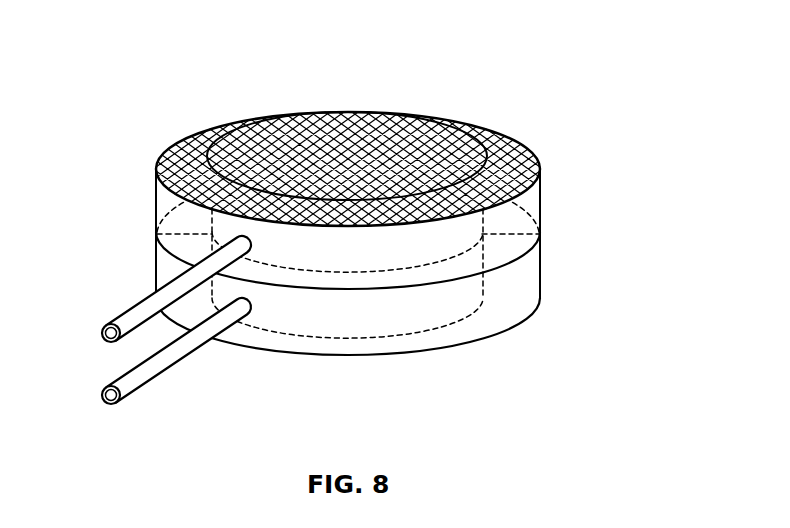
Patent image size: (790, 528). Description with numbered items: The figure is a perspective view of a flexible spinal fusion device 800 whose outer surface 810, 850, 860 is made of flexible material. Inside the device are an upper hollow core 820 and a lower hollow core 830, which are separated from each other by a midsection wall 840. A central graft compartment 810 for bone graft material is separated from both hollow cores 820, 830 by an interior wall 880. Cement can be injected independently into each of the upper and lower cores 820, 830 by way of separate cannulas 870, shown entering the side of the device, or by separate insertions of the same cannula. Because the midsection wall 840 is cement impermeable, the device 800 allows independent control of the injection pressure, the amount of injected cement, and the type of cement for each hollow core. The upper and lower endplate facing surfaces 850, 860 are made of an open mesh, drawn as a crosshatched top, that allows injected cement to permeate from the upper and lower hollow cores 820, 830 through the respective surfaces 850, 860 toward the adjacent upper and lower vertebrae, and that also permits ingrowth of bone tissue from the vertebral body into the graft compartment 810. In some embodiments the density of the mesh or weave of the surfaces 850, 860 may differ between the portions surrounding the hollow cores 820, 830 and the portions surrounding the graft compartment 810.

The flexible spinal fusion device 800 is at (150, 40).
The central graft compartment 810 is at (351, 112).
The upper hollow core 820 is at (540, 203).
The lower hollow core 830 is at (513, 305).
The midsection wall 840 is at (492, 257).
The upper endplate facing surface 850 is at (175, 116).
The lower endplate facing surface 860 is at (457, 360).
The cannulas 870 is at (138, 304).
The interior wall 880 is at (323, 318).